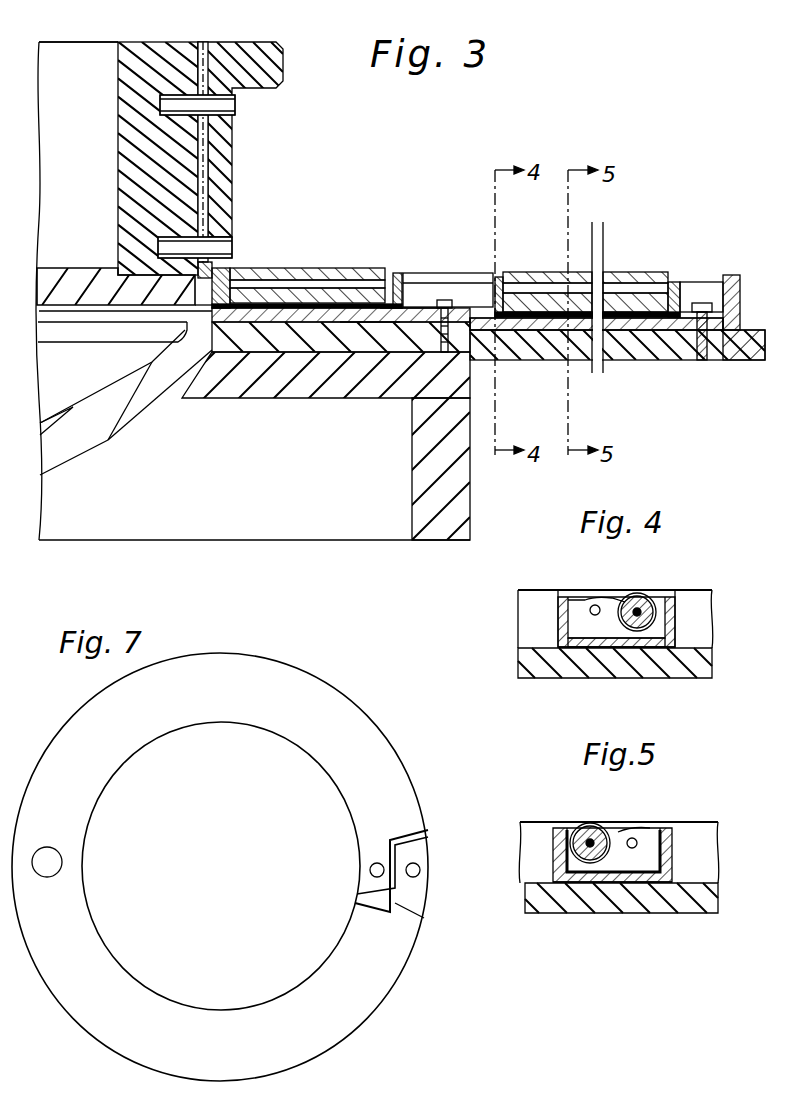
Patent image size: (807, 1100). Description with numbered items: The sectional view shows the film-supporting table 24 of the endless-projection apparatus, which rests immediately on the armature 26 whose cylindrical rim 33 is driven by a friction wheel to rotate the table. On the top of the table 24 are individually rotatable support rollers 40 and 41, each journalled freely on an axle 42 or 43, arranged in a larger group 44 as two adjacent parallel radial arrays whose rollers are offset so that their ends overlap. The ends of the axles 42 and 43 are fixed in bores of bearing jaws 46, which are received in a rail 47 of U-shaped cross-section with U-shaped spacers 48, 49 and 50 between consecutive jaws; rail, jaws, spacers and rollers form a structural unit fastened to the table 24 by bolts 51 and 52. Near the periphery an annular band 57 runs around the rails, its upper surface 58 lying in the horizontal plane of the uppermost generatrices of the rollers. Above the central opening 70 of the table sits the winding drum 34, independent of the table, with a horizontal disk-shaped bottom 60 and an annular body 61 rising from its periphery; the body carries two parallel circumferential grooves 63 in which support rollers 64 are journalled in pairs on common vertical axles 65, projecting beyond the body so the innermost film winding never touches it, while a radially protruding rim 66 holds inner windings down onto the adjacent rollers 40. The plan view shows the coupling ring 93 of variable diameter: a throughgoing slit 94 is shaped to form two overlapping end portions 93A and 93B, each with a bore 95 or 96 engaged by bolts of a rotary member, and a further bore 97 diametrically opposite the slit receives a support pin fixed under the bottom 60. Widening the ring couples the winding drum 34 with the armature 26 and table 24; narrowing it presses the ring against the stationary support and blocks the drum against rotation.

In FIG. 3, the table 24 is at (677, 358).
In FIG. 4, the table 24 is at (523, 660).
In FIG. 5, the table 24 is at (577, 905).
In FIG. 3, the armature 26 is at (88, 447).
In FIG. 3, the cylindrical rim 33 is at (466, 522).
In FIG. 3, the winding drum 34 is at (107, 37).
In FIG. 3, the support roller 40 is at (322, 268).
In FIG. 4, the support roller 40 is at (580, 598).
In FIG. 5, the support roller 40 is at (577, 827).
In FIG. 4, the support roller 41 is at (651, 596).
In FIG. 5, the support roller 41 is at (650, 828).
In FIG. 3, the axle 42 is at (357, 285).
In FIG. 4, the axle 42 is at (595, 605).
In FIG. 5, the axle 42 is at (590, 838).
In FIG. 4, the axle 43 is at (637, 600).
In FIG. 5, the axle 43 is at (632, 838).
In FIG. 3, the larger group 44 is at (444, 226).
In FIG. 3, the bearing jaw 46 is at (398, 276).
In FIG. 4, the bearing jaw 46 is at (570, 627).
In FIG. 5, the bearing jaw 46 is at (652, 858).
In FIG. 3, the rail 47 is at (637, 323).
In FIG. 4, the rail 47 is at (672, 632).
In FIG. 5, the rail 47 is at (670, 840).
In FIG. 3, the spacer 48 is at (315, 308).
In FIG. 5, the spacer 48 is at (627, 877).
In FIG. 3, the spacer 49 is at (372, 320).
In FIG. 3, the spacer 50 is at (408, 322).
In FIG. 3, the bolt 51 is at (690, 302).
In FIG. 3, the bolt 52 is at (447, 302).
In FIG. 3, the annular band 57 is at (743, 283).
In FIG. 4, the annular band 57 is at (528, 602).
In FIG. 5, the annular band 57 is at (535, 855).
In FIG. 3, the upper surface 58 is at (733, 275).
In FIG. 4, the upper surface 58 is at (538, 590).
In FIG. 5, the upper surface 58 is at (538, 822).
In FIG. 3, the bottom 60 is at (66, 266).
In FIG. 3, the annular body 61 is at (118, 127).
In FIG. 3, the circumferential groove 63 is at (218, 95).
In FIG. 3, the support roller 64 is at (236, 108).
In FIG. 3, the vertical axle 65 is at (204, 158).
In FIG. 3, the rim 66 is at (284, 66).
In FIG. 3, the central opening 70 is at (137, 322).
In FIG. 7, the coupling ring 93 is at (317, 685).
In FIG. 7, the end portion 93A is at (370, 887).
In FIG. 7, the end portion 93B is at (425, 853).
In FIG. 7, the slit 94 is at (395, 903).
In FIG. 7, the bore 95 is at (370, 867).
In FIG. 7, the bore 96 is at (420, 875).
In FIG. 7, the bore 97 is at (62, 861).